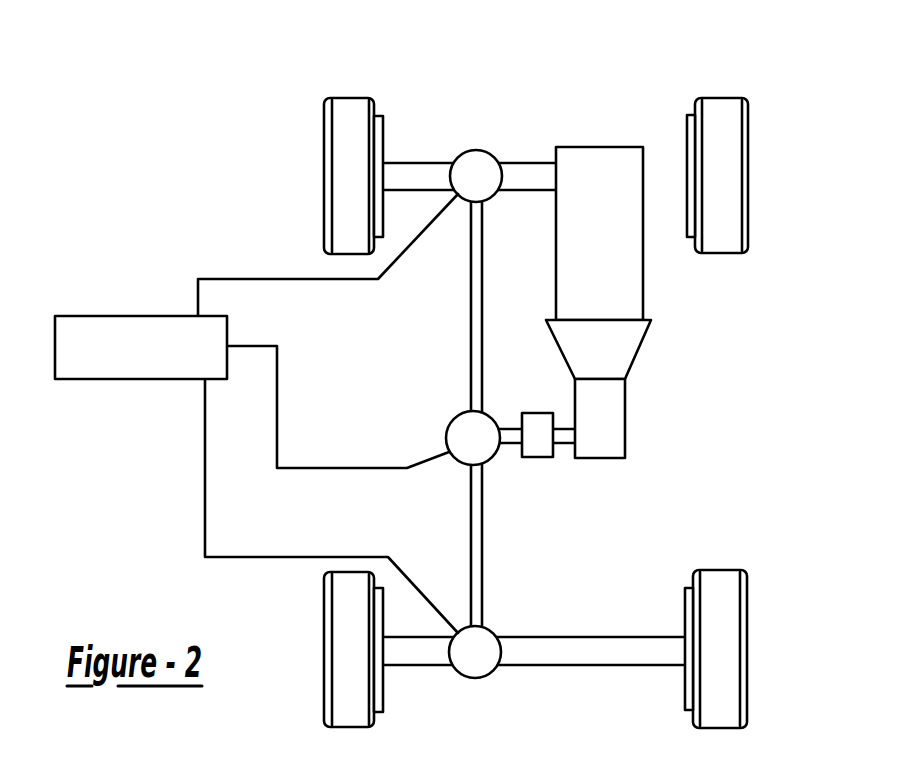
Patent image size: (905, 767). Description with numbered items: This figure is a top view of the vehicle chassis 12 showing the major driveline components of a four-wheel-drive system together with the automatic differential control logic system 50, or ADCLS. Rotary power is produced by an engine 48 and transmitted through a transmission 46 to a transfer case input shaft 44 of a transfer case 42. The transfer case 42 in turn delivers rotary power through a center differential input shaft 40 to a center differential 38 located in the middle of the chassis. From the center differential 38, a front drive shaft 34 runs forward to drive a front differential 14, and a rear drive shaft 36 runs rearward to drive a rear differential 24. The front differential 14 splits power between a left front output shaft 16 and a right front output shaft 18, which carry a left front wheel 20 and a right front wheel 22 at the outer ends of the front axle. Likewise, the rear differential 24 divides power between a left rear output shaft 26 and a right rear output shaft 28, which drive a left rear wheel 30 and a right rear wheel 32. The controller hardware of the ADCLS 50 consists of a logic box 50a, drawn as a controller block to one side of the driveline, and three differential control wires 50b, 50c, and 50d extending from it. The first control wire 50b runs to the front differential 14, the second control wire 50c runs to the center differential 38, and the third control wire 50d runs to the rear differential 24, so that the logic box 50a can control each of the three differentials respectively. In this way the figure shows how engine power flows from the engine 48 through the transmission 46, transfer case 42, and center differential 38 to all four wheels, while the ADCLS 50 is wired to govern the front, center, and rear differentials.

The vehicle chassis 12 is at (818, 124).
The front differential 14 is at (477, 150).
The left front output shaft 16 is at (418, 163).
The right front output shaft 18 is at (527, 163).
The left front wheel 20 is at (324, 133).
The right front wheel 22 is at (720, 98).
The rear differential 24 is at (493, 678).
The left rear output shaft 26 is at (425, 665).
The right rear output shaft 28 is at (620, 665).
The left rear wheel 30 is at (324, 625).
The right rear wheel 32 is at (718, 570).
The front drive shaft 34 is at (471, 293).
The rear drive shaft 36 is at (471, 520).
The center differential 38 is at (450, 423).
The center differential input shaft 40 is at (512, 443).
The transfer case 42 is at (537, 457).
The transfer case input shaft 44 is at (566, 443).
The transmission 46 is at (640, 347).
The engine 48 is at (615, 147).
The automatic differential control logic system 50 is at (72, 343).
The logic box 50a is at (118, 316).
The differential control wire 50b is at (250, 279).
The differential control wire 50c is at (277, 374).
The differential control wire 50d is at (205, 493).